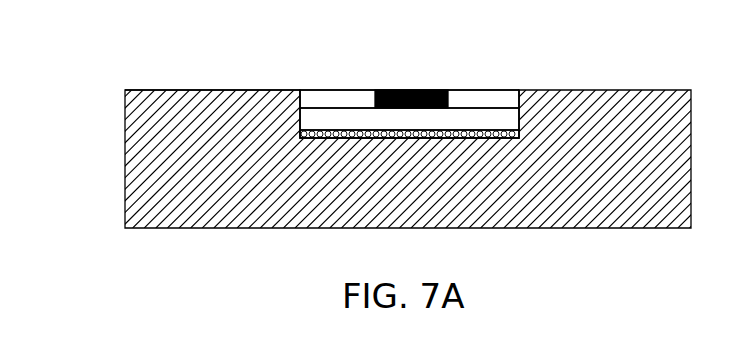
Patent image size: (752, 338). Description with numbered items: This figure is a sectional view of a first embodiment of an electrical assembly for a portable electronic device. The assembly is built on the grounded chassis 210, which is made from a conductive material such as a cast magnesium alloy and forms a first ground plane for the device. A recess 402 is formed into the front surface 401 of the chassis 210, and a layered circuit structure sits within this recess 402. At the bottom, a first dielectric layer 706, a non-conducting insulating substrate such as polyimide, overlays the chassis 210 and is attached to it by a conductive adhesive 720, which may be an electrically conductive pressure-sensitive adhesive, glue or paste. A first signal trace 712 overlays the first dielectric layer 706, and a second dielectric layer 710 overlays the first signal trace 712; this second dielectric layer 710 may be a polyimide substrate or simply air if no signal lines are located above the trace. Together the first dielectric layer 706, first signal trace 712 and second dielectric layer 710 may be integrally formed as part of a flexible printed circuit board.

The chassis 210 is at (124, 117).
The front surface 401 is at (197, 90).
The recess 402 is at (301, 113).
The second dielectric layer 710 is at (360, 79).
The first signal trace 712 is at (403, 90).
The first dielectric layer 706 is at (472, 118).
The conductive adhesive 720 is at (519, 128).